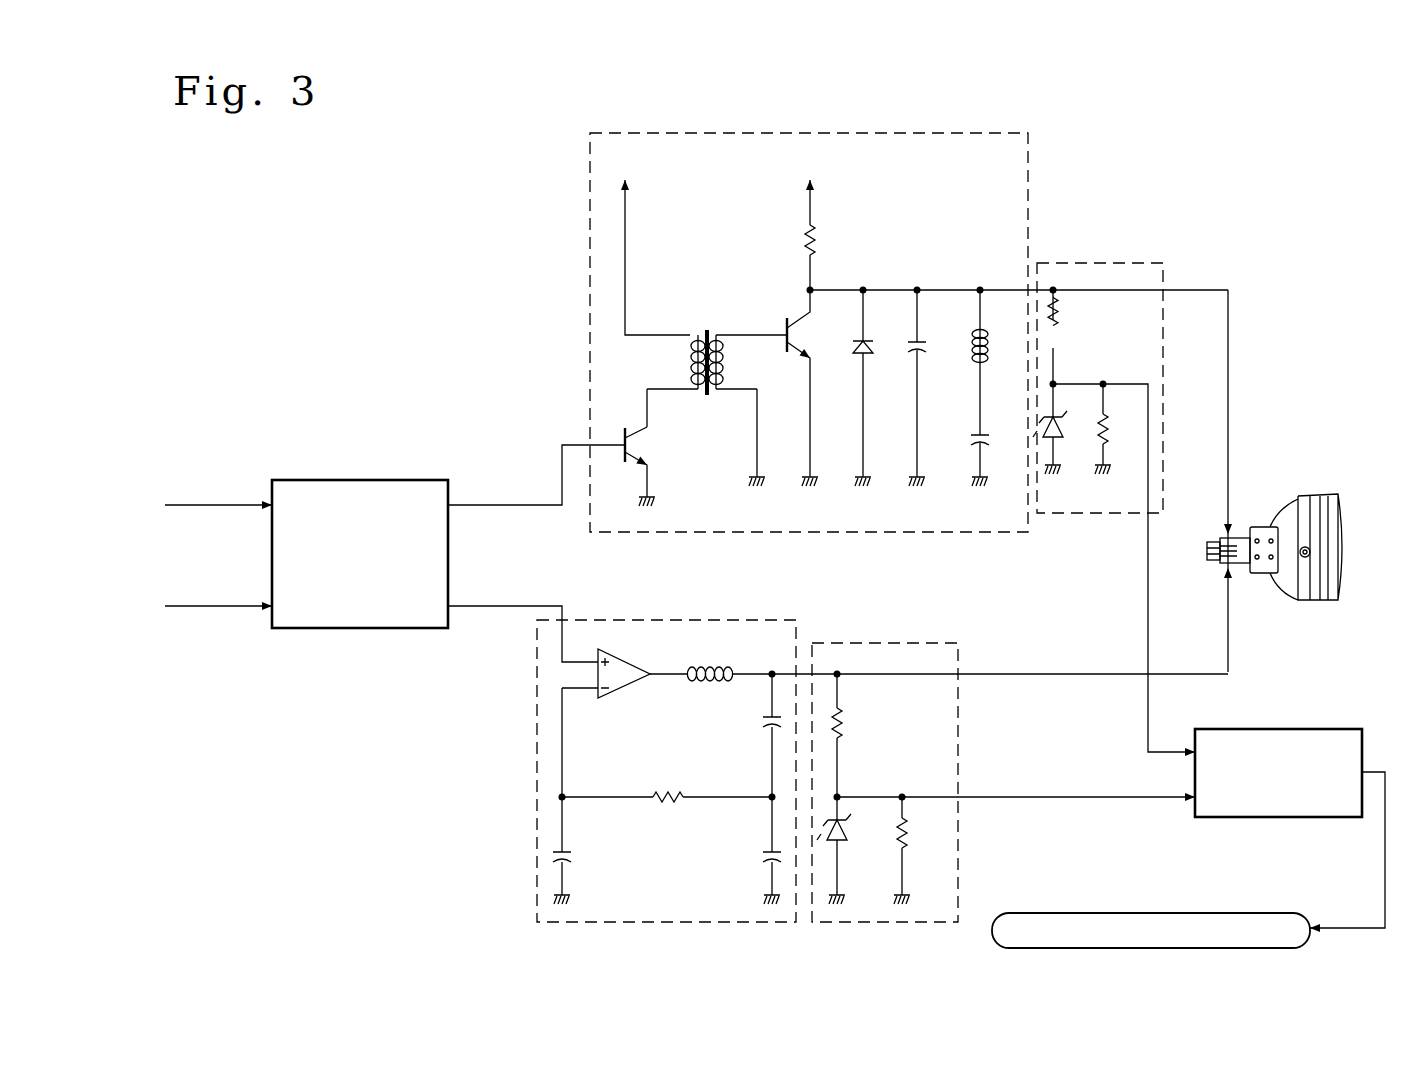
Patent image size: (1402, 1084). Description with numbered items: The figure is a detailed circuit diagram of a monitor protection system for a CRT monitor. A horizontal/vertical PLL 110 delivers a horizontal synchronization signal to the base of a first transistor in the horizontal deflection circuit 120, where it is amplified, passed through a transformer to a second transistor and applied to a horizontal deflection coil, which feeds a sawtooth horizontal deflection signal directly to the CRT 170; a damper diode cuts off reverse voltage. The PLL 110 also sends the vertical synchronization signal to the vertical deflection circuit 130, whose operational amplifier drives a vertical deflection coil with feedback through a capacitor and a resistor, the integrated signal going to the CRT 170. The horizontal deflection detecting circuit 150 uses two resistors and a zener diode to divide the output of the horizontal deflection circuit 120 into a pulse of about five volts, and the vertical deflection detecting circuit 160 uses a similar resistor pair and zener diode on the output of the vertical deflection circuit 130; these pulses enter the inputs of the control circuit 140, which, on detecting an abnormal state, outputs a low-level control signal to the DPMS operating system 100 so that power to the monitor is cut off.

The DPMS operating system 100 is at (1151, 907).
The horizontal/vertical PLL 110 is at (372, 480).
The horizontal deflection circuit 120 is at (925, 133).
The vertical deflection circuit 130 is at (742, 620).
The control circuit 140 is at (1290, 729).
The horizontal deflection detecting circuit 150 is at (1120, 263).
The vertical deflection detecting circuit 160 is at (913, 643).
The CRT 170 is at (1290, 497).